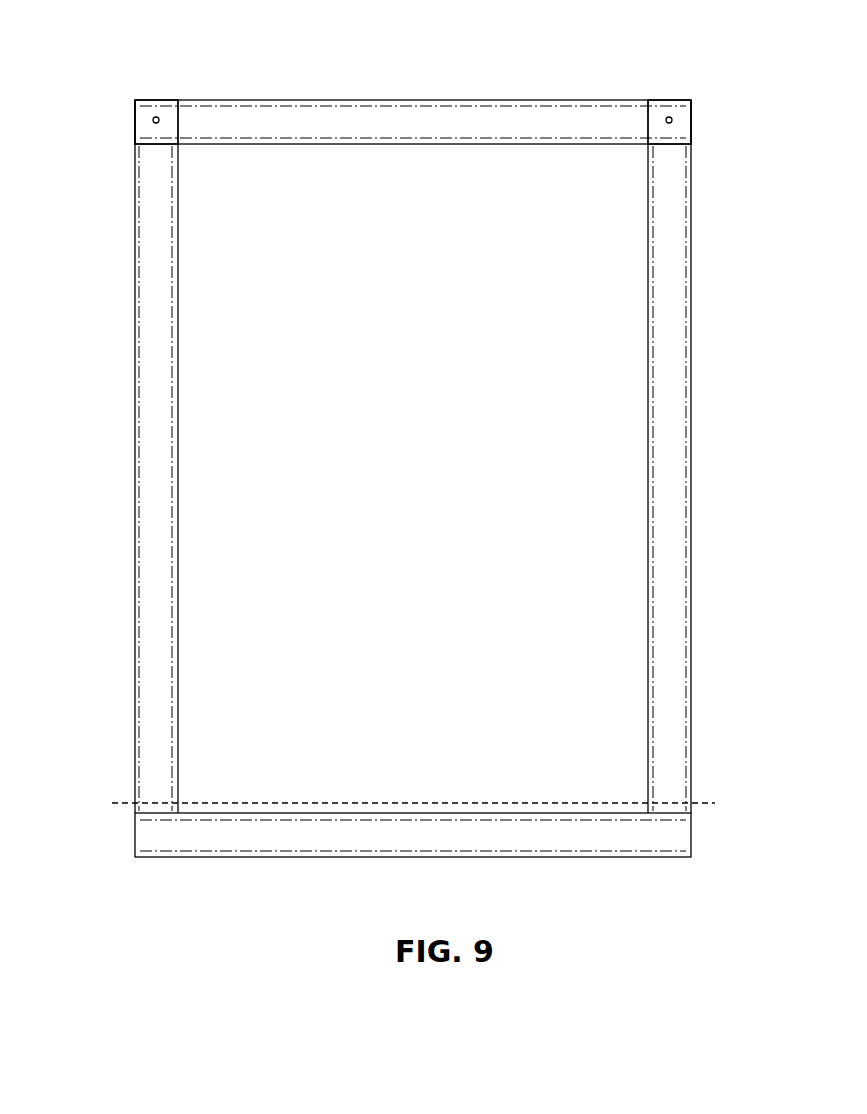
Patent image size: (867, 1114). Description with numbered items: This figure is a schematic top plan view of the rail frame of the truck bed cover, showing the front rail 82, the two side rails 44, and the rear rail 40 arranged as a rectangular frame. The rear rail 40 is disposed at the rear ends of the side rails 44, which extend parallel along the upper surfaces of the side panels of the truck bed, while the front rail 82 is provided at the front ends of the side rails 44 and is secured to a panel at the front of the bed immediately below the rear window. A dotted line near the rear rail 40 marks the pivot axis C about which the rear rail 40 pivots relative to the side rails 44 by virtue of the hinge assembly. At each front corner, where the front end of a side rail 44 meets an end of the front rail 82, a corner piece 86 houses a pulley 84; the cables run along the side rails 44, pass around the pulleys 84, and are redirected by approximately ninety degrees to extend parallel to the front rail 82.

The rear rail 40 is at (215, 832).
The front rail 82 is at (337, 118).
The side rail 44 is at (135, 460).
The pulley 84 is at (151, 120).
The corner piece 86 is at (147, 106).
The pivot axis C is at (710, 800).